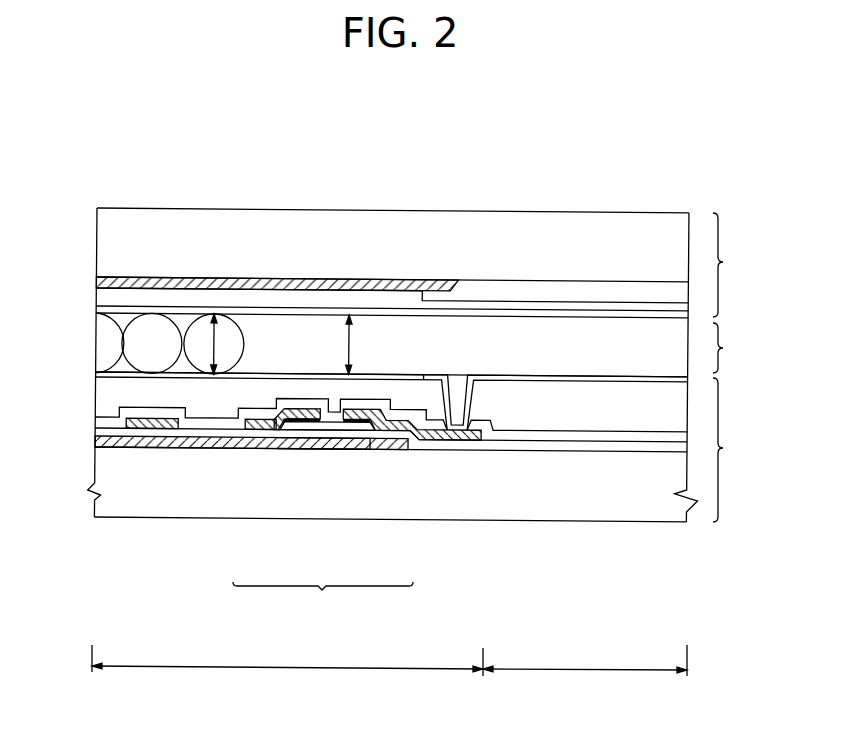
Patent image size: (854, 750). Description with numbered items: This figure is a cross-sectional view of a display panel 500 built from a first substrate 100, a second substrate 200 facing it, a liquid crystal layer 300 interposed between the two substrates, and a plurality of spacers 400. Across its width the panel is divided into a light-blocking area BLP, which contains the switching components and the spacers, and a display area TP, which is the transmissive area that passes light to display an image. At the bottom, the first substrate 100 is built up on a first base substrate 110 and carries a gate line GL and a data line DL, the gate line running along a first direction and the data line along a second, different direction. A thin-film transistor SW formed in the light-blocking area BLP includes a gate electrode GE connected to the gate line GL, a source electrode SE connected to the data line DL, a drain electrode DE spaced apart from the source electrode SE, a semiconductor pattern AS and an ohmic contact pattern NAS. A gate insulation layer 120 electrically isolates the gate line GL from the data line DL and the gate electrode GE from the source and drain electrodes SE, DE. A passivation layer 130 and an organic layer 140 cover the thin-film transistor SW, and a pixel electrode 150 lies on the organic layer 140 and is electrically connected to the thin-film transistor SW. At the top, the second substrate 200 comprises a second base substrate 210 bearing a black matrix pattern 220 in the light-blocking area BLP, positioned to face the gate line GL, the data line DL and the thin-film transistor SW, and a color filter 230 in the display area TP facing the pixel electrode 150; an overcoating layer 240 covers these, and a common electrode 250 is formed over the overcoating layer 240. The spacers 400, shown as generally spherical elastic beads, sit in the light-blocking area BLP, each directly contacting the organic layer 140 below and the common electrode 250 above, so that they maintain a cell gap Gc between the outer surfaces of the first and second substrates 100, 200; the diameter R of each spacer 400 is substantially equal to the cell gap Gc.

The display panel 500 is at (383, 113).
The second base substrate 210 is at (282, 231).
The black matrix pattern 220 is at (351, 281).
The color filter 230 is at (496, 291).
The overcoating layer 240 is at (571, 309).
The common electrode 250 is at (647, 320).
The second substrate 200 is at (737, 265).
The liquid crystal layer 300 is at (428, 350).
The spacer 400 is at (99, 345).
The diameter R is at (204, 344).
The cell gap Gc is at (363, 344).
The first substrate 100 is at (737, 450).
The first base substrate 110 is at (454, 500).
The gate insulation layer 120 is at (508, 446).
The passivation layer 130 is at (557, 436).
The organic layer 140 is at (607, 418).
The pixel electrode 150 is at (655, 379).
The gate line GL is at (162, 448).
The gate electrode GE is at (312, 444).
The data line DL is at (140, 428).
The source electrode SE is at (285, 428).
The drain electrode DE is at (347, 428).
The semiconductor pattern AS is at (358, 431).
The ohmic contact pattern NAS is at (367, 431).
The thin-film transistor SW is at (323, 600).
The light-blocking area BLP is at (287, 671).
The display area TP is at (585, 672).